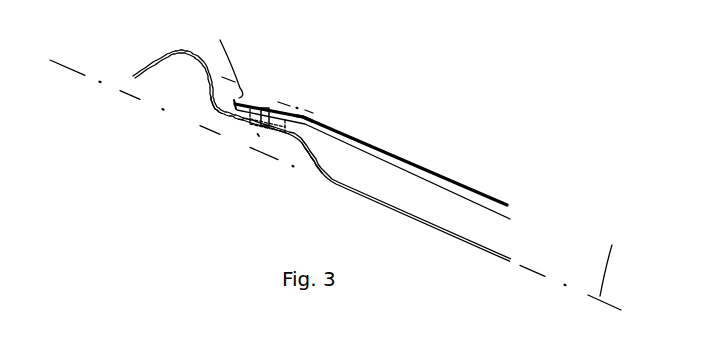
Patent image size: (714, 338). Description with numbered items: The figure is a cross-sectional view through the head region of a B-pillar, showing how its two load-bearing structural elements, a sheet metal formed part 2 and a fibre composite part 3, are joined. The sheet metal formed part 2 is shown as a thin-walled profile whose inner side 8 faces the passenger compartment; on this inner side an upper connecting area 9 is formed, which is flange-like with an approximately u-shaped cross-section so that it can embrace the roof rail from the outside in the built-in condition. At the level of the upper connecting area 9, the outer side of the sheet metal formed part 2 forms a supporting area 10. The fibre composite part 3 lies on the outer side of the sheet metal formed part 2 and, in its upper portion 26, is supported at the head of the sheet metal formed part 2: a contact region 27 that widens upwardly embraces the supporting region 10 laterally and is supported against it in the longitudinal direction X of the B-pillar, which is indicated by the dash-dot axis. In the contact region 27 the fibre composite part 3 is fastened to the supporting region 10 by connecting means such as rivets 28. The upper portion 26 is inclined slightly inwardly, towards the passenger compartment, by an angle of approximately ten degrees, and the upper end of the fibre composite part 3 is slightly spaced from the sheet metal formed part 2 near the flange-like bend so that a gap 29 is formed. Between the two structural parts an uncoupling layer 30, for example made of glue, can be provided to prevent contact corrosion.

The sheet metal formed part 2 is at (446, 232).
The fibre composite part 3 is at (390, 132).
The inner side 8 is at (322, 169).
The upper connecting area 9 is at (155, 77).
The supporting area 10 is at (284, 127).
The upper portion 26 is at (414, 157).
The contact region 27 is at (303, 117).
The rivets 28 is at (264, 103).
The gap 29 is at (221, 108).
The uncoupling layer 30 is at (245, 116).
The longitudinal direction X is at (342, 185).